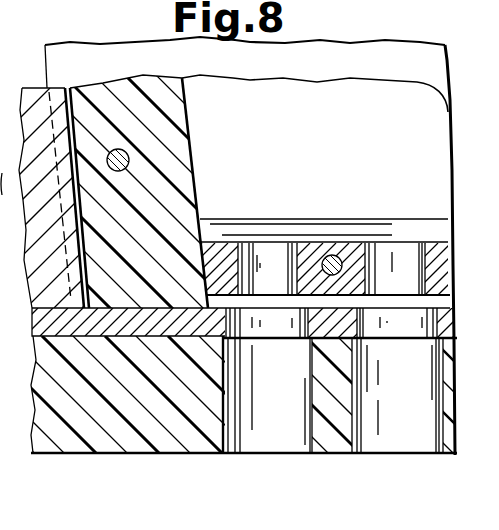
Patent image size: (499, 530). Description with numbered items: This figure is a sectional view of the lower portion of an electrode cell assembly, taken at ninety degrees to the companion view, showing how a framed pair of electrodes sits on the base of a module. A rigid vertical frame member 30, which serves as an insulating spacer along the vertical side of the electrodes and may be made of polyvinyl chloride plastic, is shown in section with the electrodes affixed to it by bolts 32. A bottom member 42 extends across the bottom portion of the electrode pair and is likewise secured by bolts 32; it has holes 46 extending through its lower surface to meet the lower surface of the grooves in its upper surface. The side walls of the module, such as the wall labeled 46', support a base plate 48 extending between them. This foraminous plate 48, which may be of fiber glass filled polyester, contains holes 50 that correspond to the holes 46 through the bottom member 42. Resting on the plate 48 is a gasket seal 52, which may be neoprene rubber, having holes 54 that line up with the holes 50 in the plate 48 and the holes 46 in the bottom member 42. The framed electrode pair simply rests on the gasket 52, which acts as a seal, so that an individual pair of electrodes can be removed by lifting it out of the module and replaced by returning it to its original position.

The frame member 30 is at (179, 107).
The bolt 32 is at (130, 162).
The bottom member 42 is at (318, 212).
The hole 46 is at (245, 187).
The insert 46' is at (23, 6).
The base plate 48 is at (178, 448).
The hole 50 is at (292, 415).
The gasket seal 52 is at (41, 325).
The hole 54 is at (304, 320).